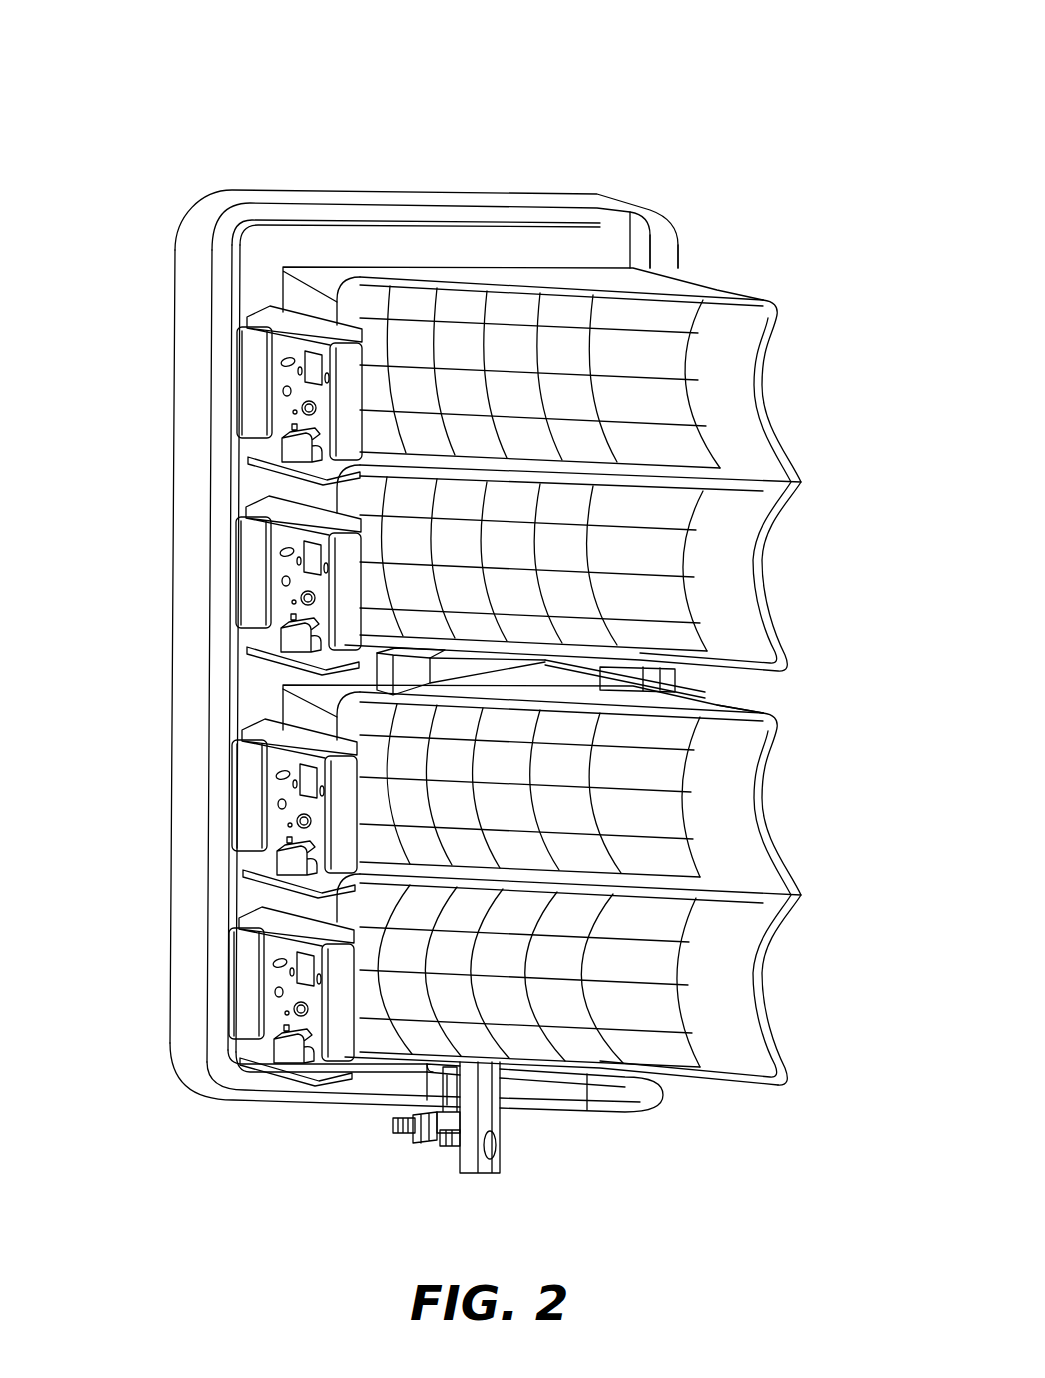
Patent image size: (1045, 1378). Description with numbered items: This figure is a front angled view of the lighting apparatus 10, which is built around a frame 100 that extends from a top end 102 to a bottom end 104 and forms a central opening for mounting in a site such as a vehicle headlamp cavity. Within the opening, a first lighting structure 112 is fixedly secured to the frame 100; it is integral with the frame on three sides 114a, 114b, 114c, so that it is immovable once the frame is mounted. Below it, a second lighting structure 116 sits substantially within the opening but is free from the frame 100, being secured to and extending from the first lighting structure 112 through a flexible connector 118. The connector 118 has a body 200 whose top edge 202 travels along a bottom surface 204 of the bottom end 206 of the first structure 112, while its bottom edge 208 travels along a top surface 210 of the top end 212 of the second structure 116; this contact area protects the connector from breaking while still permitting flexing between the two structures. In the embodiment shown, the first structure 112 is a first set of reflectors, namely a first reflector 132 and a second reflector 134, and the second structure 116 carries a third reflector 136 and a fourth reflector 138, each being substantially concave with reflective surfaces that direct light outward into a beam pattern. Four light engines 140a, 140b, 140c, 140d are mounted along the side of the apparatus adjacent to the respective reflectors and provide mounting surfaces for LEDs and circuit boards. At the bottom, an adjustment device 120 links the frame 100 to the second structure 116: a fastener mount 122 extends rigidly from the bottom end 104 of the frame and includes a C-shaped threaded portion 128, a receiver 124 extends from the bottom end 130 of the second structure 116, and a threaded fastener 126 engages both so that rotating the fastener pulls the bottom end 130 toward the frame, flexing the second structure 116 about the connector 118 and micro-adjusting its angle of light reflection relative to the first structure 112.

The lighting apparatus 10 is at (143, 116).
The frame 100 is at (177, 238).
The top end 102 is at (392, 168).
The bottom end 104 is at (226, 1141).
The first lighting structure 112 is at (835, 380).
The side 114a is at (265, 297).
The side 114b is at (478, 240).
The side 114c is at (665, 268).
The second lighting structure 116 is at (834, 942).
The connector 118 is at (348, 688).
The adjustment device 120 is at (529, 1160).
The fastener mount 122 is at (430, 1112).
The receiver 124 is at (505, 1125).
The threaded fastener 126 is at (400, 1135).
The threaded portion 128 is at (425, 1147).
The bottom end 130 is at (674, 1096).
The first reflector 132 is at (767, 341).
The second reflector 134 is at (765, 562).
The third reflector 136 is at (767, 833).
The fourth reflector 138 is at (767, 1020).
The light engine 140a is at (235, 375).
The light engine 140b is at (235, 560).
The light engine 140c is at (233, 828).
The light engine 140d is at (230, 1013).
The body 200 is at (388, 670).
The top edge 202 is at (425, 660).
The bottom surface 204 is at (448, 661).
The bottom end 206 is at (690, 678).
The bottom edge 208 is at (487, 672).
The top surface 210 is at (574, 668).
The top end 212 is at (763, 699).